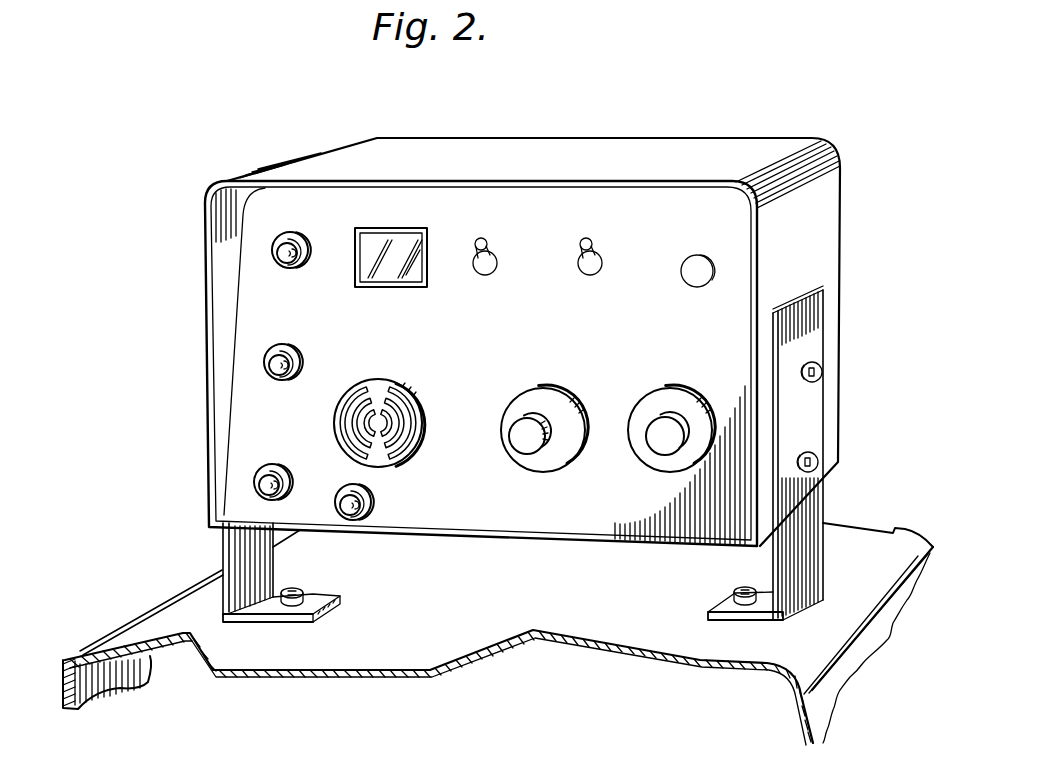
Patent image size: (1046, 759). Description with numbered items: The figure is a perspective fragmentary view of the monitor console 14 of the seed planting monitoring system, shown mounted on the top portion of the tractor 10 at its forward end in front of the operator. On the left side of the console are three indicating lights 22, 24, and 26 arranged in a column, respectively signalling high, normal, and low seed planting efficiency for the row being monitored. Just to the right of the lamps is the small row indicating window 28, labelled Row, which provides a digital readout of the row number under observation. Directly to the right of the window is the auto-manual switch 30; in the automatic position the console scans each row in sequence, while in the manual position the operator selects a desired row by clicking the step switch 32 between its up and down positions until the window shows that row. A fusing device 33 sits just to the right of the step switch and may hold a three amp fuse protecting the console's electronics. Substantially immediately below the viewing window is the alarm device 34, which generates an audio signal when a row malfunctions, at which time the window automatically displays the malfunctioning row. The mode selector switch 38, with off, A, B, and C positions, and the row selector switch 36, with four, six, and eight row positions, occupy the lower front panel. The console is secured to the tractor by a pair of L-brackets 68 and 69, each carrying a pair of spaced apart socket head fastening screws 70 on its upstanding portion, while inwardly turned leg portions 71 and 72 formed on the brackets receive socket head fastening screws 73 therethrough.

The tractor 10 is at (133, 640).
The monitor console 14 is at (653, 88).
The high indicating light 22 is at (272, 258).
The normal indicating light 24 is at (264, 367).
The low indicating light 26 is at (254, 487).
The row indicating window 28 is at (390, 245).
The auto-manual switch 30 is at (494, 249).
The step switch 32 is at (585, 240).
The fusing device 33 is at (712, 275).
The alarm device 34 is at (420, 450).
The row selector switch 36 is at (678, 467).
The mode selector switch 38 is at (553, 465).
The L-bracket 68 is at (223, 563).
The L-bracket 69 is at (820, 525).
The socket head fastening screws 70 is at (818, 461).
The inwardly turned leg portion 71 is at (297, 622).
The inwardly turned leg portion 72 is at (708, 612).
The socket head fastening screws 73 is at (300, 590).